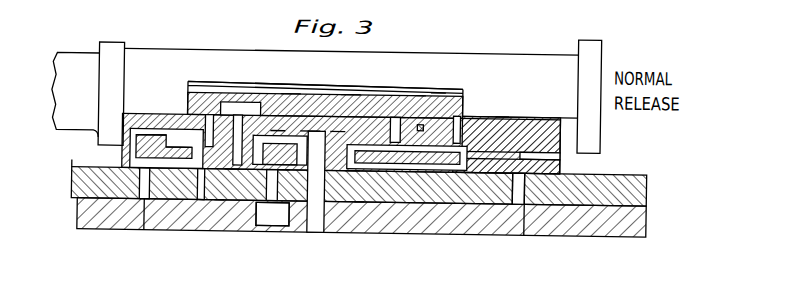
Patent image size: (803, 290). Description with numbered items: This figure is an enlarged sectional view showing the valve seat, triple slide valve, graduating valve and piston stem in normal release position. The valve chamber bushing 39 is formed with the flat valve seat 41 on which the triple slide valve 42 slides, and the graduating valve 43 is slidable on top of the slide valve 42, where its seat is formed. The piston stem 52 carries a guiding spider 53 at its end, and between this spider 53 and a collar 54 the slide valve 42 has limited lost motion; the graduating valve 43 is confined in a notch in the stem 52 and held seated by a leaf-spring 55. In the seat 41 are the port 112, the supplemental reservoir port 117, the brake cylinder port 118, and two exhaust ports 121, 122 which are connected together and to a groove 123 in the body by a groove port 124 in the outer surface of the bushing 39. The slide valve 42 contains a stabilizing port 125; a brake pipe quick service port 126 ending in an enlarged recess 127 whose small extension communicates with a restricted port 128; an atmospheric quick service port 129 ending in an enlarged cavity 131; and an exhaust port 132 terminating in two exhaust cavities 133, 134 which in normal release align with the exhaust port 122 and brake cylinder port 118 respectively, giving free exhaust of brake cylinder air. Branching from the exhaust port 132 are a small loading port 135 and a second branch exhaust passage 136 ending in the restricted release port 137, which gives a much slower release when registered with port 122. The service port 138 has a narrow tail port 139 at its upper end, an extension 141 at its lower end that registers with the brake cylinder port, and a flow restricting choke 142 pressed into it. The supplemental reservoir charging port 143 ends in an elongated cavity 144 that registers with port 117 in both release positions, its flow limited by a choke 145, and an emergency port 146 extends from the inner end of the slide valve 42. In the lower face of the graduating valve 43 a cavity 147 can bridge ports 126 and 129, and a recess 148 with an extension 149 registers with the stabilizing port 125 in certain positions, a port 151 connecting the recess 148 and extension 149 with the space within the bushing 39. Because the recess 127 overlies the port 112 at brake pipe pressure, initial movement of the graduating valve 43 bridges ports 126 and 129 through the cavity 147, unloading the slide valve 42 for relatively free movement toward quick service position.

The valve chamber bushing 39 is at (72, 184).
The flat valve seat 41 is at (72, 162).
The triple slide valve 42 is at (560, 130).
The graduating valve 43 is at (455, 104).
The piston stem 52 is at (142, 60).
The guiding spider 53 is at (587, 46).
The collar 54 is at (110, 52).
The leaf-spring 55 is at (200, 89).
The port 112 is at (78, 203).
The supplemental reservoir port 117 is at (518, 192).
The brake cylinder port 118 is at (315, 190).
The exhaust port 121 is at (204, 172).
The exhaust port 122 is at (278, 186).
The groove 123 is at (260, 190).
The groove port 124 is at (220, 190).
The stabilizing port 125 is at (136, 162).
The brake pipe quick service port 126 is at (157, 124).
The recess 127 is at (146, 134).
The restricted port 128 is at (182, 134).
The atmospheric quick service port 129 is at (258, 86).
The cavity 131 is at (232, 190).
The exhaust port 132 is at (310, 140).
The exhaust cavity 133 is at (287, 108).
The exhaust cavity 134 is at (337, 143).
The loading port 135 is at (347, 104).
The branch exhaust passage 136 is at (277, 138).
The restricted release port 137 is at (263, 213).
The service port 138 is at (397, 145).
The tail port 139 is at (503, 113).
The extension 141 is at (353, 186).
The flow restricting choke 142 is at (357, 188).
The supplemental reservoir charging port 143 is at (506, 126).
The elongated cavity 144 is at (503, 200).
The choke 145 is at (420, 119).
The emergency port 146 is at (560, 152).
The cavity 147 is at (243, 106).
The recess 148 is at (420, 88).
The extension 149 is at (398, 106).
The port 151 is at (433, 85).